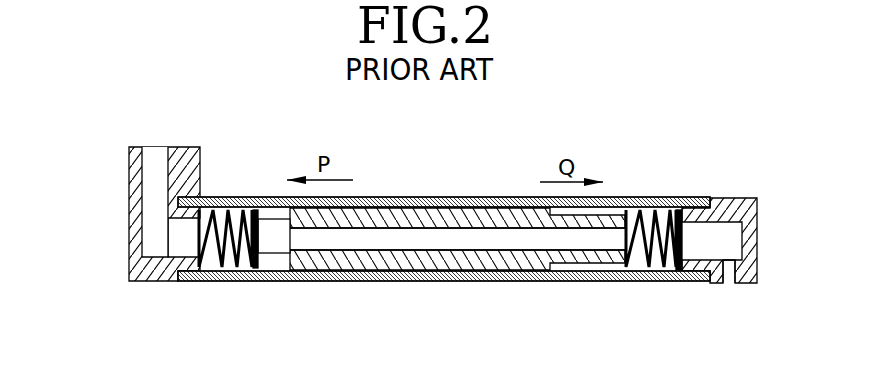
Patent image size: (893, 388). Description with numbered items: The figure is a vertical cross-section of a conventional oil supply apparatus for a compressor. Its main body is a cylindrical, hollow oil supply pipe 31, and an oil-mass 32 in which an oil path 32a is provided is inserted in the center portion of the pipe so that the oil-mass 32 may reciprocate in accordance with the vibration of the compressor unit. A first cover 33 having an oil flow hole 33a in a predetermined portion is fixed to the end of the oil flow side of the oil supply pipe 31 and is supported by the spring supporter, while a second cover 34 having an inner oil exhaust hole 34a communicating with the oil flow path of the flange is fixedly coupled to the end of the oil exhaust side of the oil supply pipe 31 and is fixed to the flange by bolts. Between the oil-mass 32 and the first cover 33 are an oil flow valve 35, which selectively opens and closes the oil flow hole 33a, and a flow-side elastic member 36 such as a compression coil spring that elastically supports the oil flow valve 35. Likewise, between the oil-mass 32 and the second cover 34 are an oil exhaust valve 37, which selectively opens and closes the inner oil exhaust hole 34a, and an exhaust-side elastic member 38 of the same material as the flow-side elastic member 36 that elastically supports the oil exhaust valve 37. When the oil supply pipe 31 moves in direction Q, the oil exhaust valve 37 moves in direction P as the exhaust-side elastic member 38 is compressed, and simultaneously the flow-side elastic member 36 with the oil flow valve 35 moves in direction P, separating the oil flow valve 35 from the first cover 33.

The oil supply pipe 31 is at (451, 203).
The oil-mass 32 is at (413, 265).
The oil path 32a is at (502, 253).
The first cover 33 is at (733, 202).
The oil flow hole 33a is at (727, 283).
The second cover 34 is at (130, 255).
The inner oil exhaust hole 34a is at (150, 185).
The oil flow valve 35 is at (677, 285).
The flow-side elastic member 36 is at (640, 283).
The oil exhaust valve 37 is at (248, 277).
The exhaust-side elastic member 38 is at (217, 278).